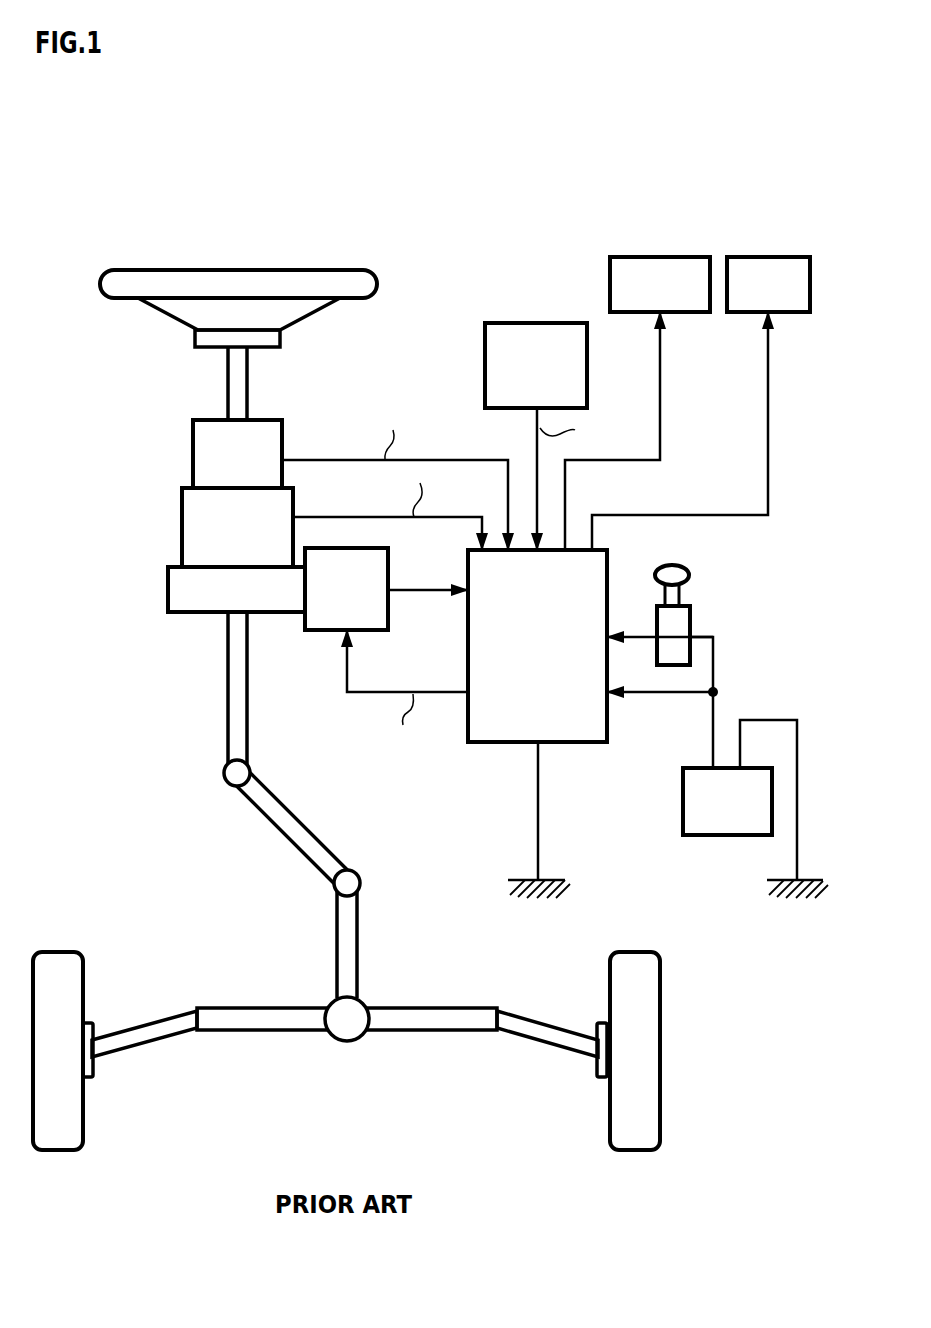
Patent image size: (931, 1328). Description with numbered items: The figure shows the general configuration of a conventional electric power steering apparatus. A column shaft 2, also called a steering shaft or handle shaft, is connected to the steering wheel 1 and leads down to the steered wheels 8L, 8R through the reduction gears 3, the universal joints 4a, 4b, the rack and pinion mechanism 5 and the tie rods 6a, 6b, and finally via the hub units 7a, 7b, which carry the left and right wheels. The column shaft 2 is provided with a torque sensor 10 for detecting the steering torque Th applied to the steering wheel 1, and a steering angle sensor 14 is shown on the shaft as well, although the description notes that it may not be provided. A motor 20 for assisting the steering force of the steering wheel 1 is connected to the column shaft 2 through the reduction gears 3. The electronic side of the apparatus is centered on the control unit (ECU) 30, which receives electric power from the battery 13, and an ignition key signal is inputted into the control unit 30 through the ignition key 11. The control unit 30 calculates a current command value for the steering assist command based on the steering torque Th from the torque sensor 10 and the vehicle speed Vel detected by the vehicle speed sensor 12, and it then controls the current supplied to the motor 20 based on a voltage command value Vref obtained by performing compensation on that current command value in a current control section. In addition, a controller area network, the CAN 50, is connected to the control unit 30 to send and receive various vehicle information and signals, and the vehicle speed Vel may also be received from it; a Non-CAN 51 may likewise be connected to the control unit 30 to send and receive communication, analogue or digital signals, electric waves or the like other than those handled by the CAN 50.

The steering wheel 1 is at (377, 275).
The column shaft 2 is at (228, 388).
The reduction gears 3 is at (168, 597).
The universal joint 4a is at (224, 778).
The universal joint 4b is at (334, 888).
The rack and pinion mechanism 5 is at (362, 1000).
The tie rod 6a is at (127, 1027).
The tie rod 6b is at (530, 1025).
The hub unit 7a is at (95, 1075).
The hub unit 7b is at (595, 1075).
The steered wheel 8L is at (83, 1136).
The steered wheel 8R is at (610, 1136).
The torque sensor 10 is at (182, 517).
The ignition key 11 is at (689, 575).
The vehicle speed sensor 12 is at (587, 335).
The battery 13 is at (683, 790).
The steering angle sensor 14 is at (193, 456).
The motor 20 is at (388, 554).
The control unit (ECU) 30 is at (607, 553).
The CAN 50 is at (797, 257).
The Non-CAN 51 is at (689, 257).